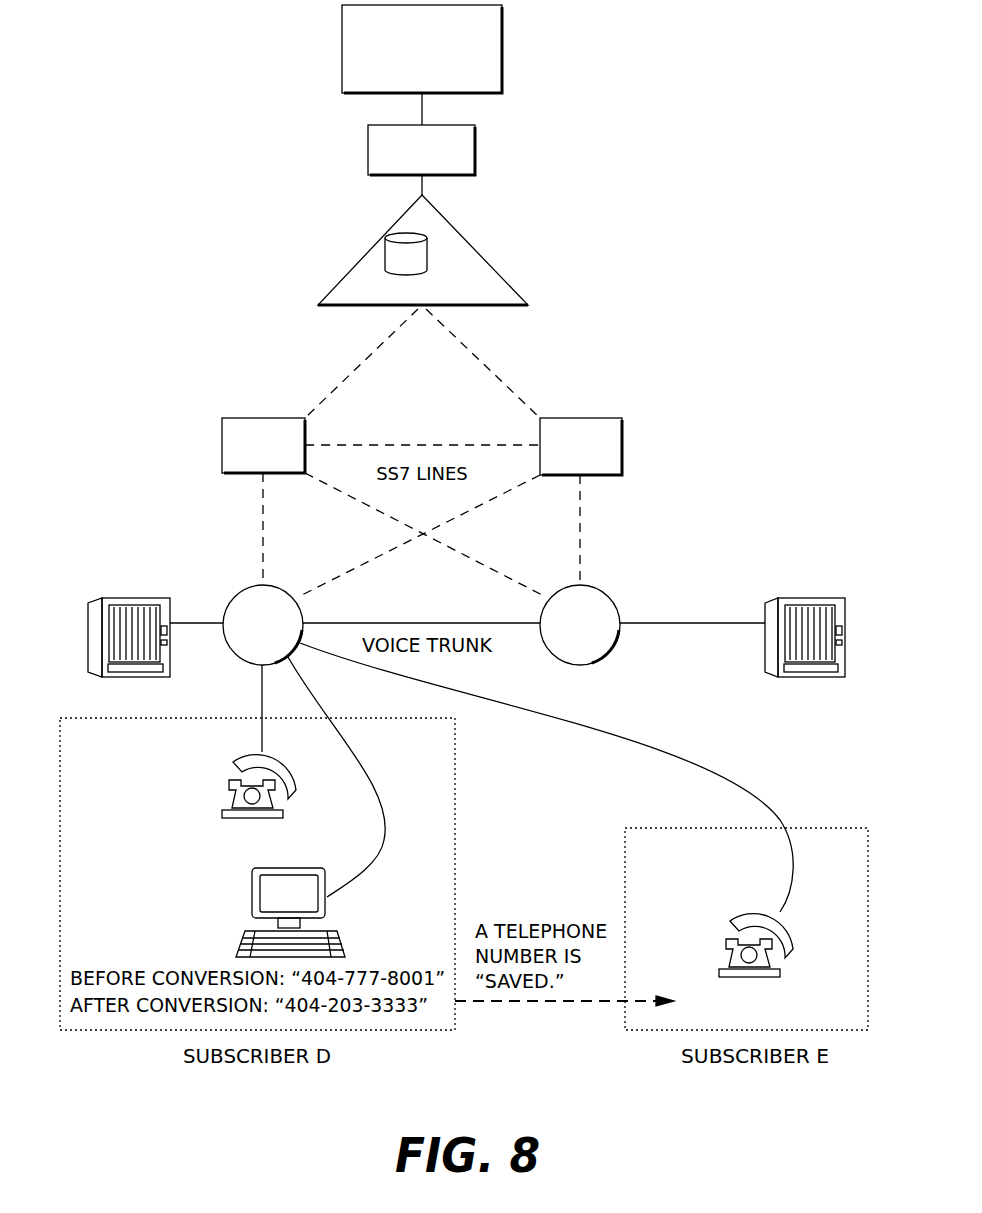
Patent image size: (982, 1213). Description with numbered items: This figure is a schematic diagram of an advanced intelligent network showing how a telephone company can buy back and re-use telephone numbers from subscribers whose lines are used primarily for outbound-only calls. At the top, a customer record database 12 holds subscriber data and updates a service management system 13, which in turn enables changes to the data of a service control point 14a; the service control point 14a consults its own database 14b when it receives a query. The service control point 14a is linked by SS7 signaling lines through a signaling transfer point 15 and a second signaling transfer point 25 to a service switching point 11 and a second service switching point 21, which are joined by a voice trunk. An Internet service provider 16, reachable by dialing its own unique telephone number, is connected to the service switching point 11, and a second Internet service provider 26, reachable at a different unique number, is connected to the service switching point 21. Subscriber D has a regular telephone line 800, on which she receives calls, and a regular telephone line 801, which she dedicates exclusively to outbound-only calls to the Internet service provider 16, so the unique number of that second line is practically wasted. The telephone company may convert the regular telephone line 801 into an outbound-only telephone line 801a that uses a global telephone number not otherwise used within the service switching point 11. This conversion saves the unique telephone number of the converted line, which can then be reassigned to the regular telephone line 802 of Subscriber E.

The service switching point 11 is at (236, 598).
The customer record database 12 is at (502, 44).
The service management system 13 is at (475, 146).
The service control point 14a is at (489, 265).
The database 14b is at (427, 250).
The signaling transfer point 15 is at (222, 445).
The Internet service provider 16 is at (92, 598).
The service switching point 21 is at (583, 585).
The signaling transfer point 25 is at (622, 441).
The Internet service provider 26 is at (831, 598).
The regular telephone line 800 is at (262, 728).
The regular telephone line 801 is at (340, 880).
The outbound-only telephone line 801a is at (368, 763).
The regular telephone line 802 is at (786, 905).